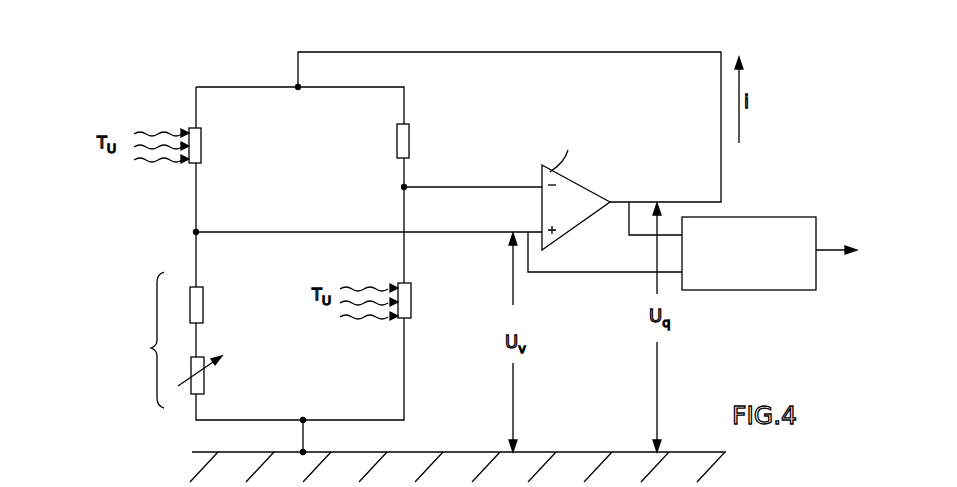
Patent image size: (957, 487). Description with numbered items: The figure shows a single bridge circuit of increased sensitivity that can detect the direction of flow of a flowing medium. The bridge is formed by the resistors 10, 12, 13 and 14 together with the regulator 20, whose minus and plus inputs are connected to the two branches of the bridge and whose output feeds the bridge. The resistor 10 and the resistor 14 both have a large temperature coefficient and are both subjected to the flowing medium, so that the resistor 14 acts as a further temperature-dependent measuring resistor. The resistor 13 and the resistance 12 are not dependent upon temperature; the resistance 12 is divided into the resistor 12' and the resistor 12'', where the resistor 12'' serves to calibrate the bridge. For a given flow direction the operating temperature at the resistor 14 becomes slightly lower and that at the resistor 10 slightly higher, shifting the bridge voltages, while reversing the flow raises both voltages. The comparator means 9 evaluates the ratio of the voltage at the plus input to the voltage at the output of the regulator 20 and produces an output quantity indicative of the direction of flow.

The resistor 10 is at (201, 145).
The resistor 13 is at (397, 139).
The resistor 12 is at (147, 340).
The resistor 12' is at (219, 305).
The resistor 12'' is at (214, 378).
The resistor 14 is at (411, 305).
The regulator 20 is at (580, 188).
The comparator means 9 is at (782, 279).